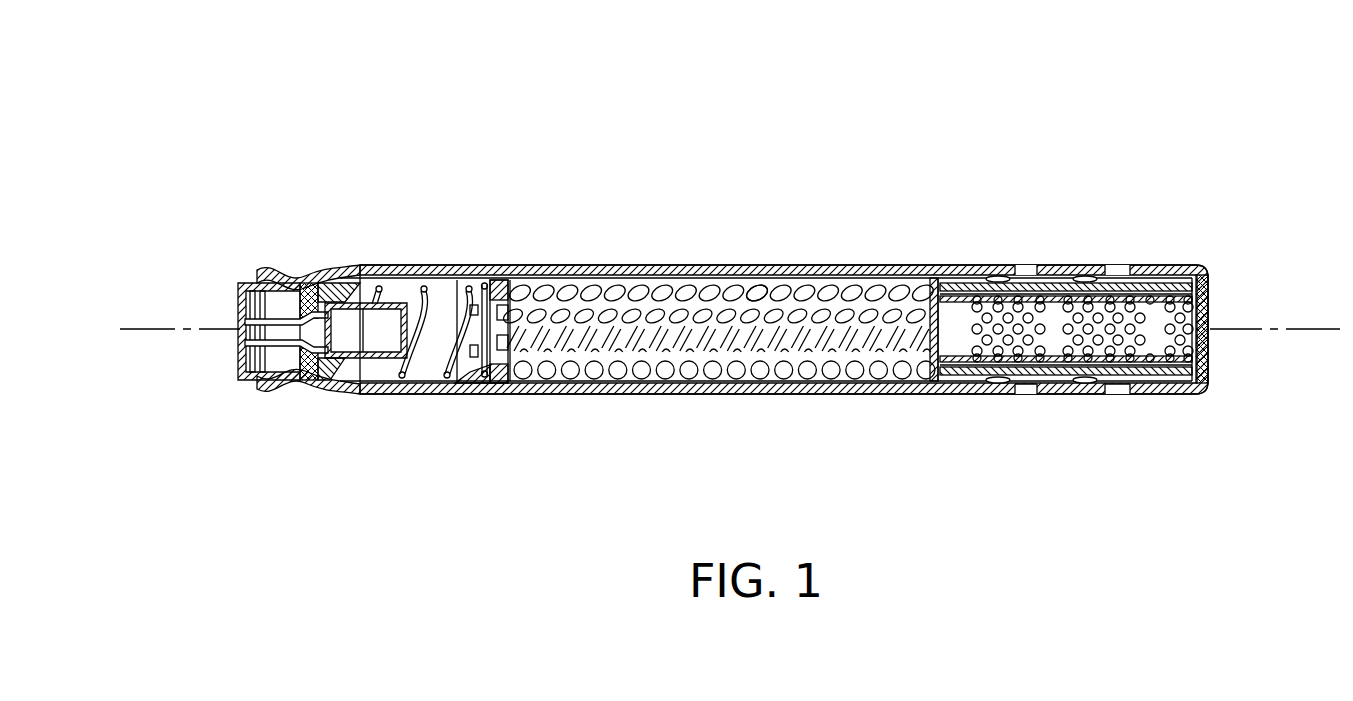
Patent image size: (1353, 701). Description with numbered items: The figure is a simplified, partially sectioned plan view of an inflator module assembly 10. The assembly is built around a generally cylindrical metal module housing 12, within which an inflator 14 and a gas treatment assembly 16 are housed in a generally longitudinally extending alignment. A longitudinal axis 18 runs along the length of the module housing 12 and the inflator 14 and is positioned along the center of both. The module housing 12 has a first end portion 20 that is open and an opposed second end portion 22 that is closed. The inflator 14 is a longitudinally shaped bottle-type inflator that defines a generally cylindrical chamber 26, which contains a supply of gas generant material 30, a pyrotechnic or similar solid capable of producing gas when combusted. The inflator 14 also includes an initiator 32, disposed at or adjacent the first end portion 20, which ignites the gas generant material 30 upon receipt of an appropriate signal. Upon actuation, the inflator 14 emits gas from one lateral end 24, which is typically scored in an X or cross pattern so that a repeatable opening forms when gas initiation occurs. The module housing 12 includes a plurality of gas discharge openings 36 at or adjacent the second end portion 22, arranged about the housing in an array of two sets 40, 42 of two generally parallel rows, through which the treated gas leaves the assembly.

The inflator module assembly 10 is at (1038, 163).
The module housing 12 is at (642, 262).
The inflator 14 is at (423, 353).
The gas treatment assembly 16 is at (1150, 318).
The longitudinal axis 18 is at (1298, 342).
The first end portion 20 is at (250, 255).
The second end portion 22 is at (1150, 428).
The end 24 is at (933, 330).
The chamber 26 is at (708, 378).
The gas generant material 30 is at (772, 292).
The initiator 32 is at (330, 340).
The gas discharge openings 36 is at (1113, 395).
The first set of gas discharge openings 40 is at (1013, 260).
The second set of gas discharge openings 42 is at (1121, 260).